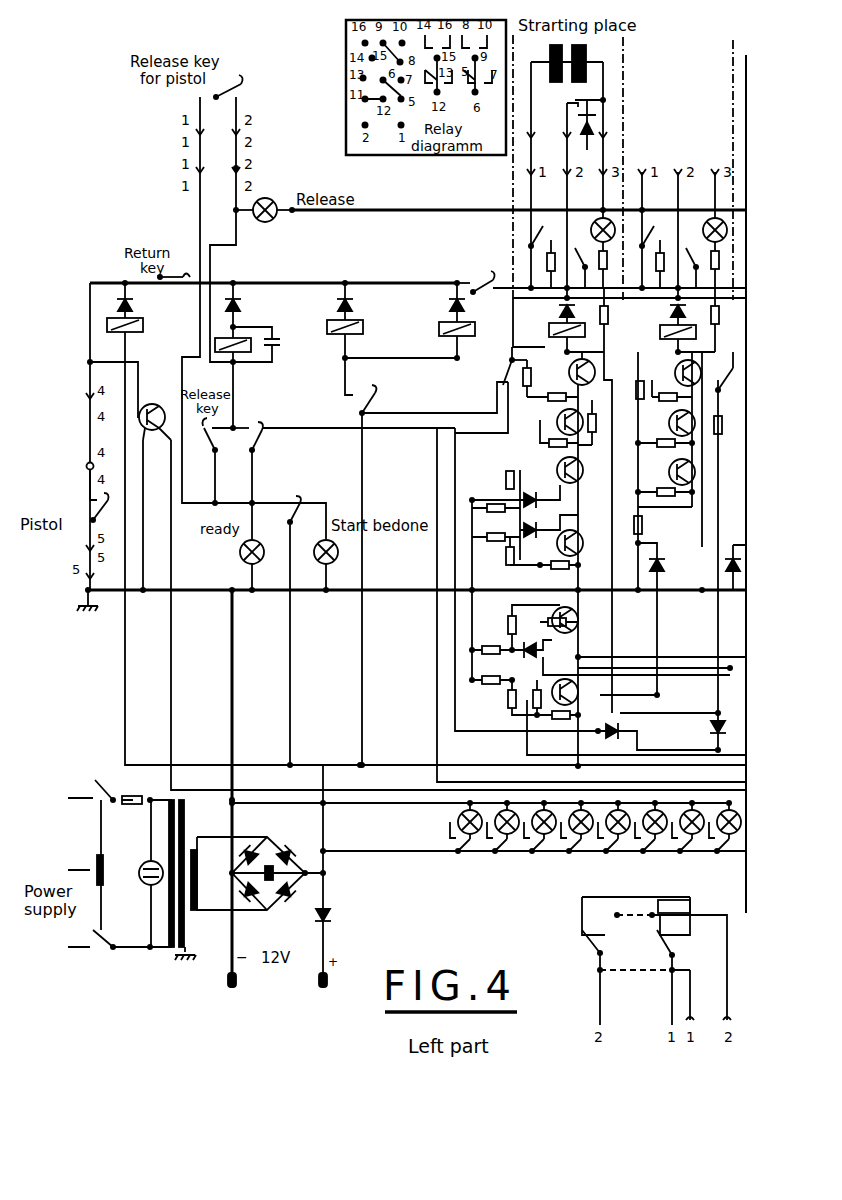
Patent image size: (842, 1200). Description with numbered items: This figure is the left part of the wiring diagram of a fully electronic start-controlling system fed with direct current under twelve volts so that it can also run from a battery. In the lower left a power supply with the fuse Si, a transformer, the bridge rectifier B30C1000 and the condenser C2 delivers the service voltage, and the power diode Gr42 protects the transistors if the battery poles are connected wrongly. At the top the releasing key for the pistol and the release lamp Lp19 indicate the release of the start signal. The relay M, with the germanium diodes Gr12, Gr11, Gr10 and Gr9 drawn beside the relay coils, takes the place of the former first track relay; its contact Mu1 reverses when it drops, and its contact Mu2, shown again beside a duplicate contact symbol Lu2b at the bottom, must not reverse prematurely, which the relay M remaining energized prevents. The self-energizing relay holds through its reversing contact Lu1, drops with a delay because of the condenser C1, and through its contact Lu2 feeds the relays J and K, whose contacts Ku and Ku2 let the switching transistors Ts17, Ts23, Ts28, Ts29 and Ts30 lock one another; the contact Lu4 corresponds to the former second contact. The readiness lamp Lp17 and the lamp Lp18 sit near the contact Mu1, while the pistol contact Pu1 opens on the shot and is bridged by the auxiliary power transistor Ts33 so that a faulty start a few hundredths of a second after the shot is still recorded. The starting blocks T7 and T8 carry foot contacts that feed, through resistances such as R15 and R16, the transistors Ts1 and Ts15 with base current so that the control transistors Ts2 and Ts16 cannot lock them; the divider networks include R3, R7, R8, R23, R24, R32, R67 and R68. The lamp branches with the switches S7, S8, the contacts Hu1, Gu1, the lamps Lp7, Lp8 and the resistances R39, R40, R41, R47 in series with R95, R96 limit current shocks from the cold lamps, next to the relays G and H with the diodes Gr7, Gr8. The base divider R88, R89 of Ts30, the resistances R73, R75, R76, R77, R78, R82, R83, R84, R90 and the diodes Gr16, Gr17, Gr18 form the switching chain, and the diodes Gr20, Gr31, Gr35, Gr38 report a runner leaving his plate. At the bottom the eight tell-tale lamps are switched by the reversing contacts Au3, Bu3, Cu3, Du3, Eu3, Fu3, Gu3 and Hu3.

The tell-tale lamp Lp19 is at (264, 201).
The germanium diode Gr12 is at (142, 300).
The relay M is at (132, 327).
The auxiliary power transistor Ts33 is at (153, 411).
The pistol contact Pu1 is at (84, 507).
The germanium diode Gr11 is at (250, 310).
The electrolytic condenser C1 is at (267, 346).
The reversing contact Lu1 is at (248, 426).
The tell-tale lamp Lp17 is at (239, 566).
The tell-tale lamp Lp18 is at (317, 566).
The reversing contact Mu1 is at (290, 504).
The germanium diode Gr10 is at (362, 301).
The relay K is at (350, 328).
The contact Lu2 is at (362, 394).
The germanium diode Gr9 is at (469, 302).
The relay J is at (461, 329).
The reversing contact Lu4 is at (476, 281).
The starting block T8 is at (567, 129).
The starting block T7 is at (678, 153).
The switch S8 is at (545, 235).
The layer resistance R40 is at (546, 264).
The reversing contact Hu1 is at (589, 262).
The control lamp Lp8 is at (595, 249).
The resistance R41 is at (617, 262).
The switch S7 is at (658, 235).
The layer resistance R39 is at (655, 264).
The reversing contact Gu1 is at (699, 262).
The control lamp Lp7 is at (707, 249).
The resistance R47 is at (728, 262).
The germanium diode Gr8 is at (580, 309).
The relay H is at (575, 331).
The resistance R95 is at (618, 320).
The germanium diode Gr7 is at (691, 310).
The relay G is at (686, 334).
The resistance R96 is at (729, 320).
The pnp transistor Ts15 is at (570, 368).
The contact of relay K Ku is at (486, 395).
The layer resistance R8 is at (523, 376).
The layer resistance R16 is at (552, 390).
The control transistor Ts16 is at (557, 421).
The layer resistance R32 is at (555, 433).
The layer resistance R24 is at (595, 422).
The control transistor Ts2 is at (557, 467).
The layer resistance R73 is at (495, 478).
The layer resistance R75 is at (487, 490).
The germanium diode Gr16 is at (539, 489).
The layer resistance R76 is at (496, 514).
The germanium diode Gr17 is at (542, 525).
The layer resistance R77 is at (507, 551).
The switching transistor Ts28 is at (581, 546).
The layer resistance R78 is at (557, 572).
The switching transistor Ts29 is at (576, 621).
The resistor R84 is at (553, 612).
The resistor R83 is at (534, 627).
The resistor R82 is at (496, 643).
The germanium diode Gr18 is at (530, 656).
The base resistance R88 is at (493, 673).
The base resistance R89 is at (512, 697).
The resistor R90 is at (544, 697).
The switching transistor Ts30 is at (573, 698).
The diode Gr20 is at (650, 736).
The layer resistance R7 is at (635, 377).
The pnp transistor Ts1 is at (677, 369).
The layer resistance R15 is at (672, 390).
The switching transistor Ts17 is at (669, 421).
The layer resistance R3 is at (665, 437).
The switching transistor Ts23 is at (666, 467).
The layer resistance R67 is at (665, 485).
The contact of relay K Ku2 is at (729, 382).
The layer resistance R23 is at (724, 431).
The layer resistance R68 is at (652, 526).
The germanium diode Gr38 is at (660, 620).
The germanium diode Gr35 is at (724, 567).
The diode Gr31 is at (725, 733).
The reversing contact Hu3 is at (460, 836).
The reversing contact Gu3 is at (498, 836).
The reversing contact Fu3 is at (536, 836).
The reversing contact Eu3 is at (573, 836).
The lamp Du3 is at (610, 836).
The reversing contact Cu3 is at (646, 836).
The lamp Bu3 is at (683, 836).
The reversing contact Au3 is at (720, 836).
The fuse Si is at (120, 789).
The bridge rectifier B30C1000 is at (272, 863).
The electrolytic condenser C2 is at (277, 880).
The silicon power diode Gr42 is at (343, 943).
The contact Mu2 is at (601, 967).
The relay contact Lu2b is at (669, 962).